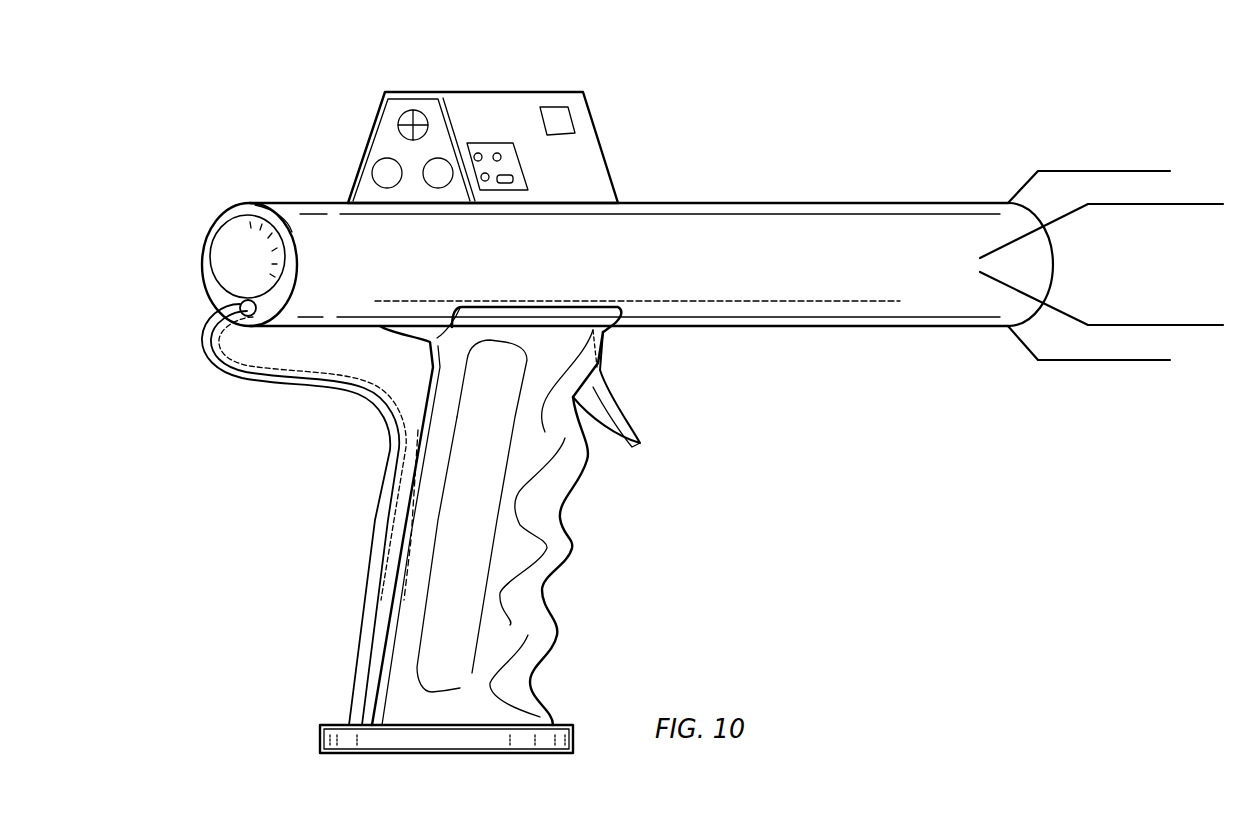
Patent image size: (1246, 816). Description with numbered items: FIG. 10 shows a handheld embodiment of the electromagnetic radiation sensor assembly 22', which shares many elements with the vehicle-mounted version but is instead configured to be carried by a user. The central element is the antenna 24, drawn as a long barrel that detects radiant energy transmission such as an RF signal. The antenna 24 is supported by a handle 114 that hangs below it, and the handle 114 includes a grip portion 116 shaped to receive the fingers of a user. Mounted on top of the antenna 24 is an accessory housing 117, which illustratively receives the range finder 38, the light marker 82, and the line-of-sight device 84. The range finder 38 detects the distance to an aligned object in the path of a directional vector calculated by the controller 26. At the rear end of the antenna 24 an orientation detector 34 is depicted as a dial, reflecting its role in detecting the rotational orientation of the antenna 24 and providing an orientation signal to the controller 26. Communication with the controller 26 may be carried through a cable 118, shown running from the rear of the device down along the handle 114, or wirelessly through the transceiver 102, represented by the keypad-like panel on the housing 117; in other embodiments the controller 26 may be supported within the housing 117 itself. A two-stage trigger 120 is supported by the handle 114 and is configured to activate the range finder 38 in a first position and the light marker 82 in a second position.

The handheld electromagnetic radiation sensor assembly 22' is at (961, 101).
The antenna 24 is at (895, 305).
The controller 26 is at (554, 107).
The orientation detector 34 is at (223, 220).
The range finder 38 is at (445, 162).
The light marker 82 is at (413, 110).
The line-of-sight device 84 is at (380, 172).
The transmitter 102 is at (522, 177).
The handle 114 is at (523, 540).
The grip portion 116 is at (593, 463).
The accessory housing 117 is at (588, 135).
The cable 118 is at (362, 408).
The two-stage trigger 120 is at (622, 410).